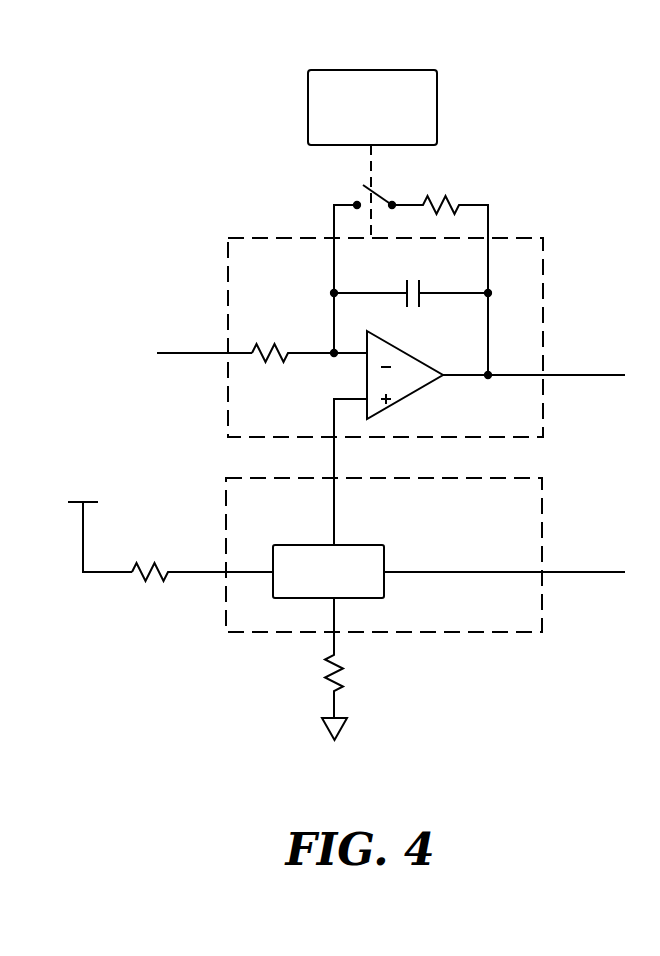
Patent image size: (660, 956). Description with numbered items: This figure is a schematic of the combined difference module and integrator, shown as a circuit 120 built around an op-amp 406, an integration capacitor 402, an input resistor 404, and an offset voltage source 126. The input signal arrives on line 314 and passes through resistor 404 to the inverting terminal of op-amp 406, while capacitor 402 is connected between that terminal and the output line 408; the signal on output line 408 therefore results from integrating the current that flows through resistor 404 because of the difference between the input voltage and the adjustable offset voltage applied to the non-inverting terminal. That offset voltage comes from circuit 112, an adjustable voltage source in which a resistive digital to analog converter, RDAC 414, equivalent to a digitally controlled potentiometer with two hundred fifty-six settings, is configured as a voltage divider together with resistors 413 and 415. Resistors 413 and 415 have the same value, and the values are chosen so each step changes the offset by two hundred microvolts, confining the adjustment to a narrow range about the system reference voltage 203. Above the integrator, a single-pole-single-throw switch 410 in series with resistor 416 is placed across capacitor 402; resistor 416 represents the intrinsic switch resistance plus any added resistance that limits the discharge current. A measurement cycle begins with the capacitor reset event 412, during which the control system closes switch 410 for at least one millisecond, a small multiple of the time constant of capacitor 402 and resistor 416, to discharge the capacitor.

The reset event 412 is at (438, 93).
The switch 410 is at (357, 188).
The resistor 416 is at (442, 192).
The circuit 120 is at (543, 258).
The capacitor 402 is at (412, 280).
The line 314 is at (200, 350).
The resistor 404 is at (263, 338).
The op-amp 406 is at (425, 390).
The output line 408 is at (582, 375).
The circuit 112 is at (527, 522).
The offset voltage source 126 is at (384, 555).
The supply voltage 203 is at (87, 478).
The resistor 413 is at (153, 582).
The resistive digital to analog converter (RDAC) 414 is at (287, 598).
The resistor 415 is at (345, 688).